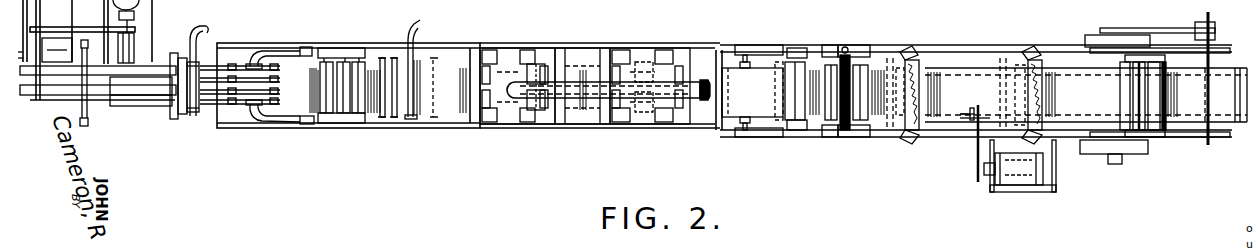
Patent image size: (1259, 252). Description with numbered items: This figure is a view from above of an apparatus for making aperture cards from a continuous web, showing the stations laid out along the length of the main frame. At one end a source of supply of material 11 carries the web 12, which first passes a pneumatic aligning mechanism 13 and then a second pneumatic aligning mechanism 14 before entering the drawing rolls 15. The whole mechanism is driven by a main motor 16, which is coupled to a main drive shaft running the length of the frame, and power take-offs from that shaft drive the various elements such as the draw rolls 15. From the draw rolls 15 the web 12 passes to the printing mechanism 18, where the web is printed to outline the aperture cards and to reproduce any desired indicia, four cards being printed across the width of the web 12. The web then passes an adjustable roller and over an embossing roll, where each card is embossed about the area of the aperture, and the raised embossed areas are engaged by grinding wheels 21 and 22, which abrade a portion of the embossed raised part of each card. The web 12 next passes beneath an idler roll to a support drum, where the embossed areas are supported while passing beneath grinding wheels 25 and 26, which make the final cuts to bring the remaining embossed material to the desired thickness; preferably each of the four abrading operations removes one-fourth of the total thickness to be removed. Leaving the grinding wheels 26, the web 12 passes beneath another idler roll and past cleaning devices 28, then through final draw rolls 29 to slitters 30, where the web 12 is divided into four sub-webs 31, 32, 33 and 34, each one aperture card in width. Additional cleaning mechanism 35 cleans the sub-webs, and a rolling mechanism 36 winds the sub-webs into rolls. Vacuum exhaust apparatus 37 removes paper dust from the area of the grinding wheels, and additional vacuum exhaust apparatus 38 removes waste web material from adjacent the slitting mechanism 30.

The source of supply of material 11 is at (1166, 72).
The web 12 is at (455, 75).
The pneumatic aligning mechanism 13 is at (1040, 60).
The second pneumatic aligning mechanism 14 is at (918, 62).
The drawing rolls 15 is at (852, 60).
The main motor 16 is at (1035, 182).
The printing mechanism 18 is at (776, 45).
The grinding wheel 21 is at (665, 74).
The grinding wheel 22 is at (640, 48).
The grinding wheel 25 is at (540, 70).
The grinding wheel 26 is at (505, 48).
The cleaning devices 28 is at (406, 63).
The final draw rolls 29 is at (348, 66).
The slitters 30 is at (278, 80).
The sub-web 31 is at (158, 100).
The sub-web 32 is at (96, 92).
The sub-web 33 is at (158, 78).
The sub-web 34 is at (68, 72).
The cleaning mechanism 35 is at (207, 26).
The rolling mechanism 36 is at (57, 48).
The vacuum exhaust apparatus 37 is at (706, 88).
The vacuum exhaust apparatus 38 is at (302, 48).